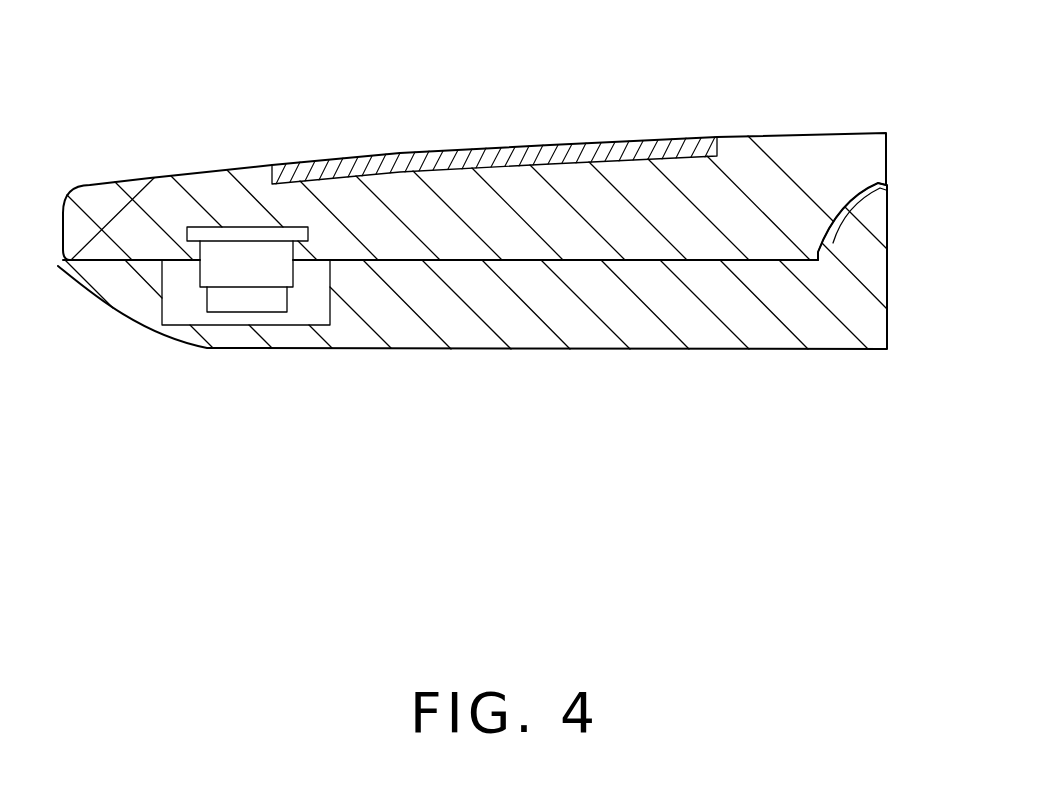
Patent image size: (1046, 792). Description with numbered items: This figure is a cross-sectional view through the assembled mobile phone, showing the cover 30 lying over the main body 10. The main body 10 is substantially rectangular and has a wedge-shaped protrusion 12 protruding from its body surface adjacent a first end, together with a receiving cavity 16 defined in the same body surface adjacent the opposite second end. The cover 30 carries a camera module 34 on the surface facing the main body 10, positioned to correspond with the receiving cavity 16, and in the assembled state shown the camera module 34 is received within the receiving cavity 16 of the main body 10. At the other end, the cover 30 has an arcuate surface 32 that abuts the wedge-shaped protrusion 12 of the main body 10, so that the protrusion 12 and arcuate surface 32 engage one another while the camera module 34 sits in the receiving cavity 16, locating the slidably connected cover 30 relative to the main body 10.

The main body 10 is at (650, 315).
The wedge-shaped protrusion 12 is at (839, 226).
The receiving cavity 16 is at (312, 297).
The cover 30 is at (137, 219).
The arcuate surface 32 is at (843, 203).
The camera module 34 is at (220, 265).